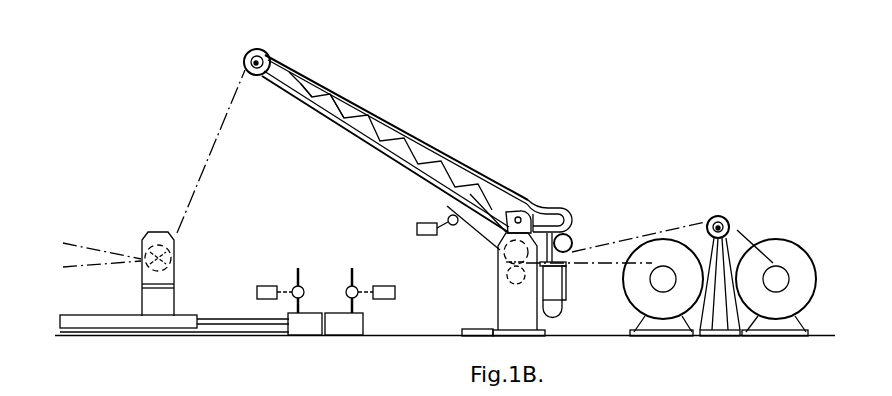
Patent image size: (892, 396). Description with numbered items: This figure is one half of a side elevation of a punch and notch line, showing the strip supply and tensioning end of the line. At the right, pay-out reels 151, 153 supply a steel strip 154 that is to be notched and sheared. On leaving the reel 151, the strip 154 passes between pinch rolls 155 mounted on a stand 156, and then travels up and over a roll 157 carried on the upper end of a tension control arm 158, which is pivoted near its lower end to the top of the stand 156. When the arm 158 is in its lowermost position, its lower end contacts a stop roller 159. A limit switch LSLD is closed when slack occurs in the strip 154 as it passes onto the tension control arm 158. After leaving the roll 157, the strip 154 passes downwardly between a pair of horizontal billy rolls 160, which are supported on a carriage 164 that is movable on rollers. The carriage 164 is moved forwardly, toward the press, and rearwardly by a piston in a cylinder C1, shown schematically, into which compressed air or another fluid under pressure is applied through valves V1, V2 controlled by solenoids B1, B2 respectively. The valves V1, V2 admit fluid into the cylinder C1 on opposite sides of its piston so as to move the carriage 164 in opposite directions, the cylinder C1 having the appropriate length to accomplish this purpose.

The roll 157 is at (271, 56).
The tension control arm 158 is at (420, 148).
The steel strip 154 is at (429, 189).
The limit switch LSLD is at (425, 235).
The pinch rolls 155 is at (497, 268).
The stand 156 is at (497, 303).
The stop roller 159 is at (575, 272).
The horizontal billy rolls 160 is at (176, 250).
The carriage 164 is at (114, 322).
The cylinder C1 is at (300, 330).
The valve V1 is at (304, 292).
The solenoid B1 is at (272, 280).
The valve V2 is at (356, 298).
The solenoid B2 is at (385, 286).
The pay-out reel 151 is at (659, 285).
The pay-out reel 153 is at (772, 285).